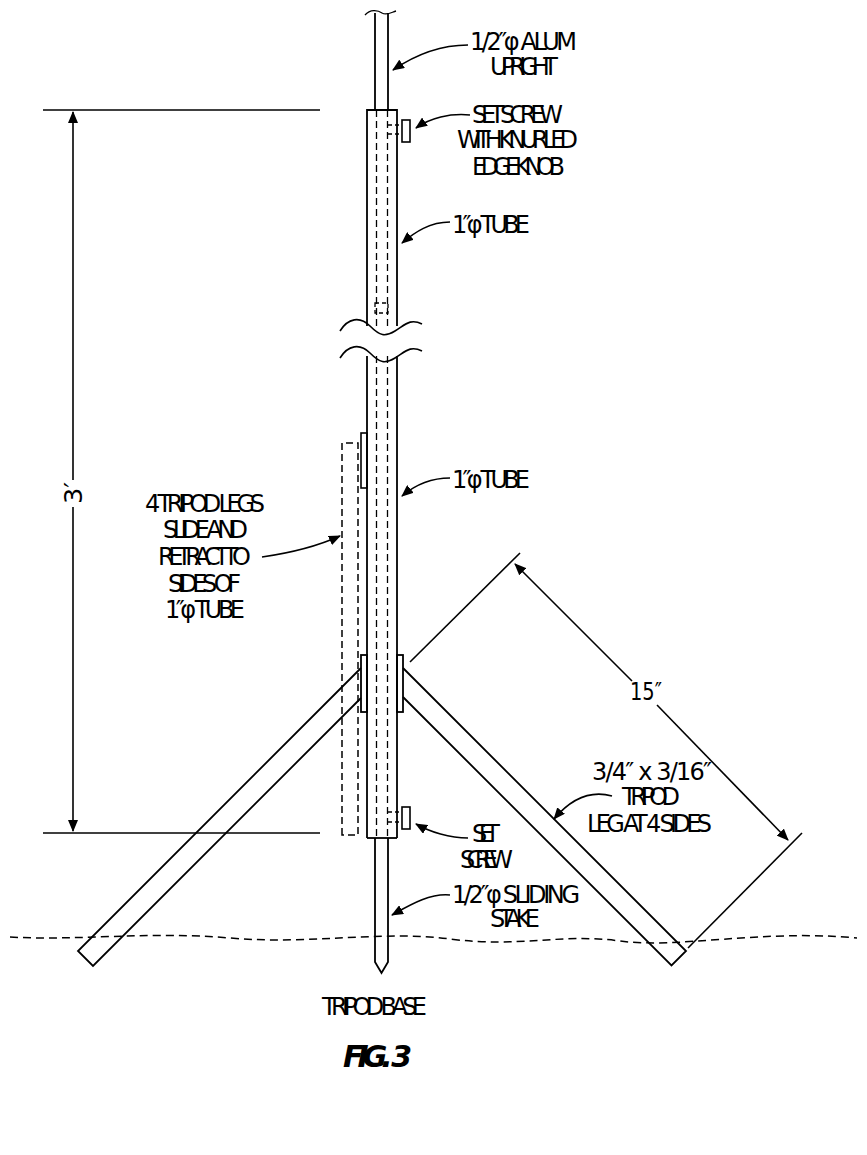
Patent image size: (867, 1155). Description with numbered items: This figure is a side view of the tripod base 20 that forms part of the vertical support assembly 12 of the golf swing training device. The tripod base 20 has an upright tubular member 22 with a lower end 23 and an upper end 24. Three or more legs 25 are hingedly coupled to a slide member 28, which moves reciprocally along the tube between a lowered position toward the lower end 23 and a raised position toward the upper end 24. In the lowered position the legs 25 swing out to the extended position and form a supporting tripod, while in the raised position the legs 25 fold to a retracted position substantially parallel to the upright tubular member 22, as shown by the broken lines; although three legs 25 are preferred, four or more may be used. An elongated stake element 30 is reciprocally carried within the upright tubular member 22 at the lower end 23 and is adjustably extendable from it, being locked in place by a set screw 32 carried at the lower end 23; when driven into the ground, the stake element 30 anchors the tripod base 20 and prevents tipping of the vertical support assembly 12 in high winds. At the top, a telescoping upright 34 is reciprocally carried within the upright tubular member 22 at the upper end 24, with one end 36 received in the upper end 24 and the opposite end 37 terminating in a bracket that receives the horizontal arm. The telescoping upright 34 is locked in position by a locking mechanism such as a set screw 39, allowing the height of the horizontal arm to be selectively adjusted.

The vertical support assembly 12 is at (442, 398).
The tripod base 20 is at (292, 724).
The upright tubular member 22 is at (397, 552).
The lower end 23 is at (398, 800).
The upper end 24 is at (367, 131).
The legs 25 is at (450, 716).
The slide member 28 is at (405, 660).
The elongated stake element 30 is at (388, 878).
The set screw 32 is at (405, 803).
The telescoping upright 34 is at (375, 68).
The end 36 is at (385, 305).
The end 37 is at (388, 18).
The set screw 39 is at (410, 119).